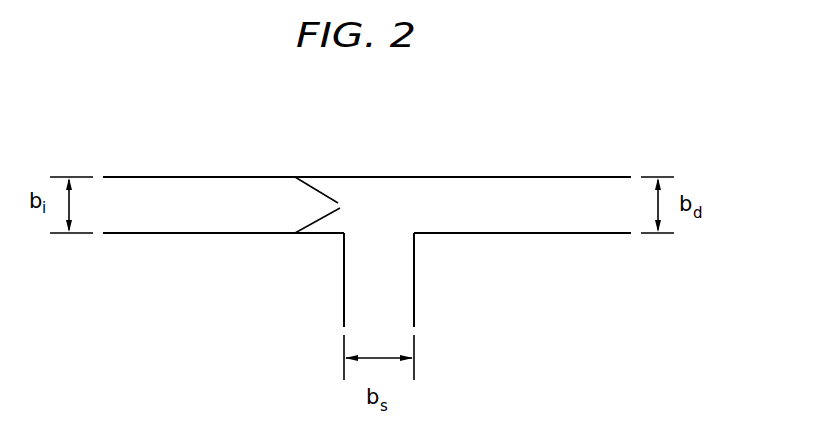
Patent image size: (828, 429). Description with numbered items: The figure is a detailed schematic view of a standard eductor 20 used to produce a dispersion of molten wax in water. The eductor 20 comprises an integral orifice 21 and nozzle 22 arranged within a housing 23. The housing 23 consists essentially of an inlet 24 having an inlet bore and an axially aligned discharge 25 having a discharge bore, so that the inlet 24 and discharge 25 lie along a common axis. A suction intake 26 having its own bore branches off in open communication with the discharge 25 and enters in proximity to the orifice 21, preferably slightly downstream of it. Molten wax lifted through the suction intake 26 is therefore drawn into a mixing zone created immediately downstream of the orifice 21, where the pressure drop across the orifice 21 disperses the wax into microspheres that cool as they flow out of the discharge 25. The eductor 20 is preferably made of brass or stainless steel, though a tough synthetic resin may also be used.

The eductor 20 is at (290, 266).
The orifice 21 is at (343, 207).
The nozzle 22 is at (316, 190).
The housing 23 is at (442, 177).
The inlet 24 is at (258, 177).
The discharge 25 is at (554, 233).
The suction intake 26 is at (414, 295).